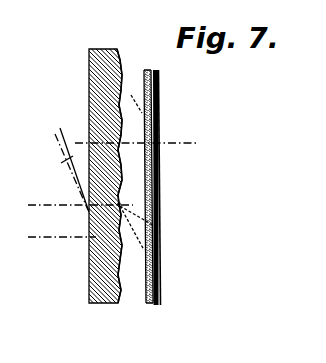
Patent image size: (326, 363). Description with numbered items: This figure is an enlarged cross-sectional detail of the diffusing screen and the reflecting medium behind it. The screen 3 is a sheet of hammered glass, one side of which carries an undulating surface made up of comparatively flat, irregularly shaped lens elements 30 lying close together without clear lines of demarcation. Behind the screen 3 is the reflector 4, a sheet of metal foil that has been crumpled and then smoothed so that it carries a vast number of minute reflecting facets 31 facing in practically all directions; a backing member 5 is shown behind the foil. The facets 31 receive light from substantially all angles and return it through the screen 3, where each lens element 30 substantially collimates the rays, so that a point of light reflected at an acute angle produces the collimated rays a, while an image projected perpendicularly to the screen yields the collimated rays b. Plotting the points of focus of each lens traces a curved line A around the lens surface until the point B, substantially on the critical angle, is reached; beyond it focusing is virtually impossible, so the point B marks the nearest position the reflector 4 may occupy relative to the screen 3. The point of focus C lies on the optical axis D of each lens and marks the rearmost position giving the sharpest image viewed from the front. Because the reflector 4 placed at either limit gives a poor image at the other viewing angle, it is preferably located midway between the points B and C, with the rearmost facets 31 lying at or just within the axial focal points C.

The screen 3 is at (97, 88).
The lens elements 30 is at (121, 100).
The reflecting facets 31 is at (144, 72).
The reflector 4 is at (161, 228).
The backing plate 5 is at (160, 178).
The curved line A is at (134, 111).
The point on critical angle B is at (135, 191).
The point of focus on optical axis C is at (160, 128).
The optical axis D is at (136, 131).
The light rays a is at (67, 159).
The light rays b is at (36, 237).